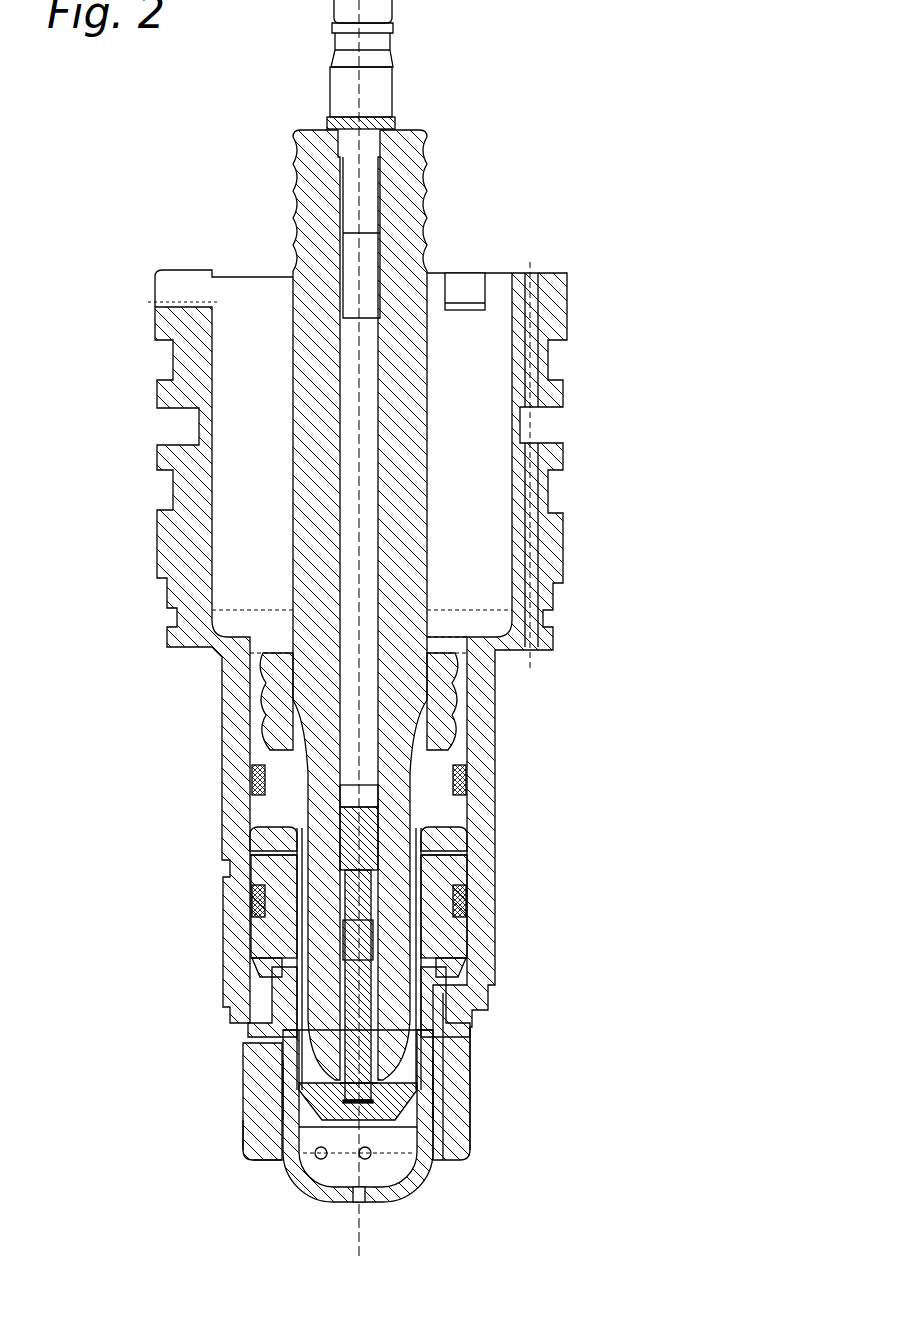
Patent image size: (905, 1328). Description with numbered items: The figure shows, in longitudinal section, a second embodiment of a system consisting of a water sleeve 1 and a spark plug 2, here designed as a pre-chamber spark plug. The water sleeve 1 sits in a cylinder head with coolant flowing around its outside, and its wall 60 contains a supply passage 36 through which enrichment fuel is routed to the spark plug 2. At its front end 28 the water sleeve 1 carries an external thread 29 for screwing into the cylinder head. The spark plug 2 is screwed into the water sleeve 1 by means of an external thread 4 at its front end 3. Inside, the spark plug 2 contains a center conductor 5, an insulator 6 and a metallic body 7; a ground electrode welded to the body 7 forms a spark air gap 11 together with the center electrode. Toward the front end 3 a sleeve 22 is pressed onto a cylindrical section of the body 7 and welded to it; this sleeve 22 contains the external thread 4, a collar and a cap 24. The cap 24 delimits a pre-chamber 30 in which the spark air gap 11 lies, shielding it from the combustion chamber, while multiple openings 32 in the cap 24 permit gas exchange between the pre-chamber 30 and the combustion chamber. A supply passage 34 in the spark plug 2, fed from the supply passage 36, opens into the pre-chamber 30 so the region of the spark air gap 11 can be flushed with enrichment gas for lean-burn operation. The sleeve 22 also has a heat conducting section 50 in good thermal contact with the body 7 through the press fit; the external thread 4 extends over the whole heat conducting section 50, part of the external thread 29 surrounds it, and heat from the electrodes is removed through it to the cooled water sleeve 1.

The water sleeve 1 is at (235, 292).
The spark plug 2 is at (429, 134).
The front end 3 is at (336, 1203).
The external thread 4 is at (272, 1088).
The center conductor 5 is at (372, 262).
The insulator 6 is at (413, 185).
The body 7 is at (266, 827).
The spark air gap 11 is at (380, 1130).
The sleeve 22 is at (290, 1025).
The cap 24 is at (425, 1176).
The front end 28 is at (262, 1162).
The external thread 29 is at (245, 1142).
The pre-chamber 30 is at (320, 1170).
The openings 32 is at (362, 1195).
The supply passage 34 is at (296, 942).
The supply passage 36 is at (468, 852).
The heat conducting section 50 is at (437, 988).
The wall 60 is at (228, 756).